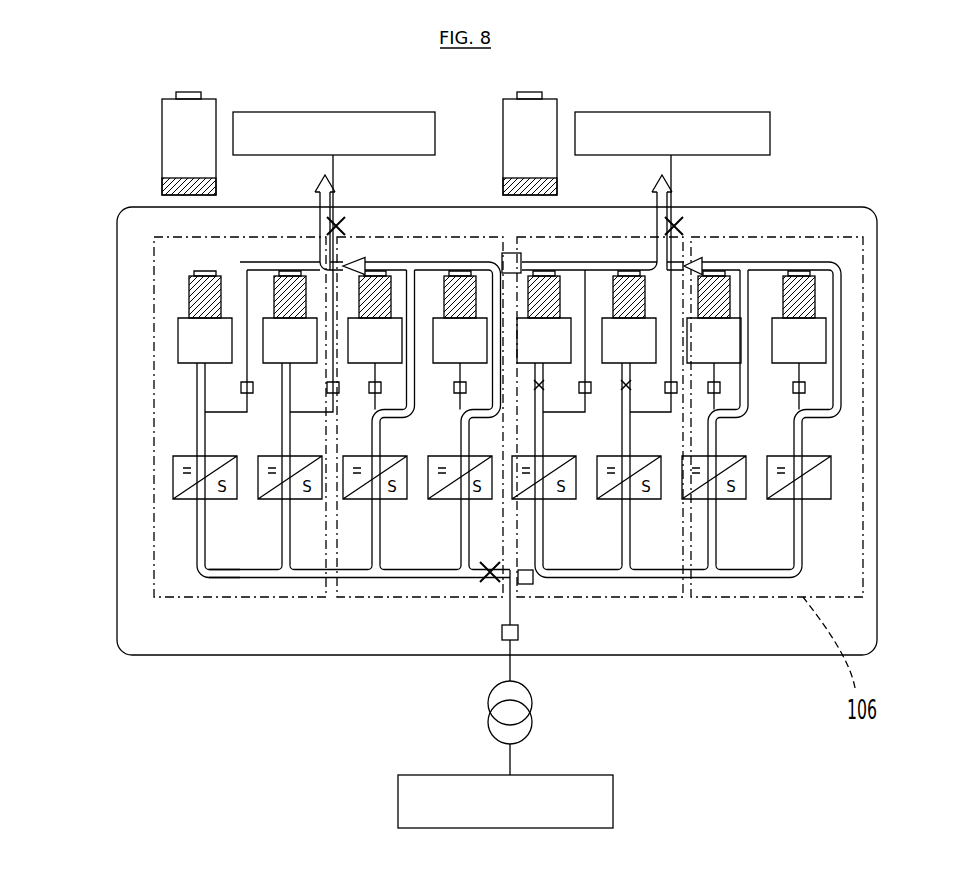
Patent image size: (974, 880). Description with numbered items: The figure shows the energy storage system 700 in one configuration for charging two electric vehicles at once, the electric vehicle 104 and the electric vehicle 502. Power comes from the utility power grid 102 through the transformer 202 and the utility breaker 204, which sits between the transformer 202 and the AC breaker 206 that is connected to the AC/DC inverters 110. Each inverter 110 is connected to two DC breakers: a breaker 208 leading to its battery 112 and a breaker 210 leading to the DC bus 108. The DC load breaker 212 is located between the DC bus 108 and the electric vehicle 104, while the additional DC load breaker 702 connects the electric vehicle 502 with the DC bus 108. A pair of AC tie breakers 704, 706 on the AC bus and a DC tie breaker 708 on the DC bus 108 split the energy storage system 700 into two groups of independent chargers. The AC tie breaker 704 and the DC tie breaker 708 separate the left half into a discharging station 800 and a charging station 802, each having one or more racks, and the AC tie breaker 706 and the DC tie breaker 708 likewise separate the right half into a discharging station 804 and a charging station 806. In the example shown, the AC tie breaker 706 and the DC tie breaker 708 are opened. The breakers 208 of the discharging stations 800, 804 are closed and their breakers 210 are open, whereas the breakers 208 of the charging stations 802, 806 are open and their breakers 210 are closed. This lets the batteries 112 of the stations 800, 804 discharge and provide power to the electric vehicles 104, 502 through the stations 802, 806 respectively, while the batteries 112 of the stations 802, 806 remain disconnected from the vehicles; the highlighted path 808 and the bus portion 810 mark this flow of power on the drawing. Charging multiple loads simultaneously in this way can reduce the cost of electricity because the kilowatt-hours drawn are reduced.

The energy storage system 700 is at (140, 207).
The DC bus 108 is at (240, 262).
The battery 112 is at (148, 337).
The breaker 208 is at (228, 389).
The breaker 210 is at (204, 392).
The battery power path 808 is at (192, 562).
The discharging station 800 is at (237, 598).
The charging station 802 is at (360, 598).
The discharging station 804 is at (667, 600).
The charging station 806 is at (822, 237).
The AC tie breaker 704 is at (482, 580).
The transformer 202 is at (495, 714).
The utility breaker 204 is at (540, 633).
The AC tie breaker 706 is at (553, 590).
The utility power grid 102 is at (613, 797).
The electric vehicle 104 is at (337, 111).
The electric vehicle 502 is at (688, 111).
The DC load breaker 212 is at (352, 219).
The DC load breaker 702 is at (698, 218).
The DC tie breaker 708 is at (527, 246).
The second bus conductor 810 is at (843, 283).
The AC/DC inverter 110 is at (832, 481).
The AC breaker 206 is at (812, 534).